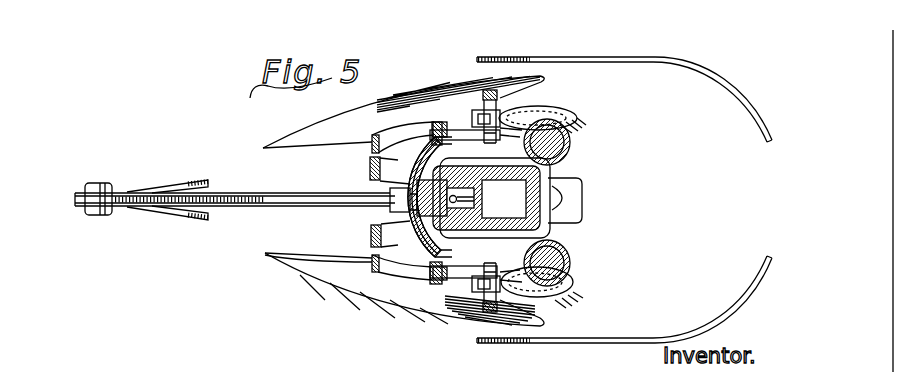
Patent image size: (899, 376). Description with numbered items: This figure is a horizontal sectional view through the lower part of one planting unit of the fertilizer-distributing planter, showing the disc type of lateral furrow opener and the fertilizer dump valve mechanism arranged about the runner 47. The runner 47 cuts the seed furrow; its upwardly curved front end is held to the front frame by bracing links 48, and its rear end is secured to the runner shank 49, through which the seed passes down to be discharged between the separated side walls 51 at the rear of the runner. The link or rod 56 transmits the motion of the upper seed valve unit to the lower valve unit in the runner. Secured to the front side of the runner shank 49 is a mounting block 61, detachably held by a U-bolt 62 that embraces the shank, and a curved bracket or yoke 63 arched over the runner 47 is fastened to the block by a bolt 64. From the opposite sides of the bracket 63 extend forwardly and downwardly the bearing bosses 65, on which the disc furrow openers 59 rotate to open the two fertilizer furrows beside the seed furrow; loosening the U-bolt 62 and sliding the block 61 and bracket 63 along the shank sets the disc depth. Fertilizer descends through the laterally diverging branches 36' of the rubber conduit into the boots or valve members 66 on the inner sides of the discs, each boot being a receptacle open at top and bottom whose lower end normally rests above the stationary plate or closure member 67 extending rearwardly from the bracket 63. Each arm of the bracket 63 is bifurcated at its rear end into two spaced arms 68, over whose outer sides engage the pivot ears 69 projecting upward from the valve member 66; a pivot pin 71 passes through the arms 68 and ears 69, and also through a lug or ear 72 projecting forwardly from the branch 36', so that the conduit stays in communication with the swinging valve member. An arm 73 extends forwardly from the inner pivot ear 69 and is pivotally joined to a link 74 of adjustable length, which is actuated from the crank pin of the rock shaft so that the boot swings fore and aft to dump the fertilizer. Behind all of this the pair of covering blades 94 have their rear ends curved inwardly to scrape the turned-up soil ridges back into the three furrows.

The branch of the divided conduit 36' is at (577, 203).
The runner 47 is at (240, 191).
The bracing links 48 is at (210, 182).
The runner shank 49 is at (408, 204).
The side walls 51 is at (575, 168).
The link or rod 56 is at (305, 259).
The furrow openers 59 is at (263, 148).
The mounting block 61 is at (413, 189).
The U-bolt 62 is at (553, 170).
The curved bracket or yoke 63 is at (376, 170).
The bolt 64 is at (392, 199).
The bearing bosses 65 is at (370, 145).
The boot or valve member 66 is at (565, 113).
The plate member or closure member 67 is at (540, 304).
The spaced arms 68 is at (470, 113).
The pivot ears 69 is at (513, 103).
The pivot pin 71 is at (496, 110).
The lug or ear 72 is at (485, 108).
The arm 73 is at (445, 142).
The link 74 is at (436, 118).
The covering blades 94 is at (683, 66).